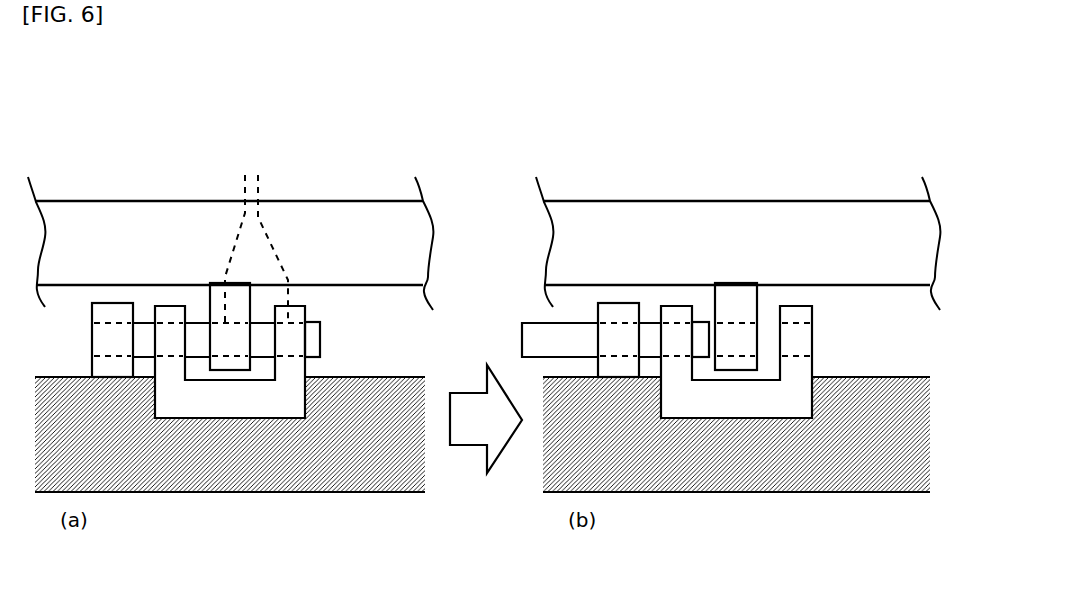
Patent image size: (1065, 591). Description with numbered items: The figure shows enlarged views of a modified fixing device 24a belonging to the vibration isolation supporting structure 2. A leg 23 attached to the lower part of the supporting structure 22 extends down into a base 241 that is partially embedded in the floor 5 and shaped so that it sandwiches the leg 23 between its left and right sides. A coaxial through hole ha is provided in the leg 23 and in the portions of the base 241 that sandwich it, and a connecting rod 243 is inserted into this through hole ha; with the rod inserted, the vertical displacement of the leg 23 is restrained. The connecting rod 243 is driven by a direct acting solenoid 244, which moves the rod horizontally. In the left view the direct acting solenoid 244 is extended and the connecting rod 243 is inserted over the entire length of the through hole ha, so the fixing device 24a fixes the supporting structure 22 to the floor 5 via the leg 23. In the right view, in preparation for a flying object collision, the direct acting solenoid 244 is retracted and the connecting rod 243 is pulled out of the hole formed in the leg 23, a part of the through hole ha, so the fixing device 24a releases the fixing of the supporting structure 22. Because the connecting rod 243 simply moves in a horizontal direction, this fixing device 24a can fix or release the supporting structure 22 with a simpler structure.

The vibration isolation supporting structure 2 is at (315, 193).
The supporting structure 22 is at (361, 211).
The fixing device 24a is at (228, 128).
The direct acting solenoid 244 is at (113, 303).
The connecting rod 243 is at (143, 330).
The base 241 is at (170, 313).
The leg 23 is at (232, 365).
The through hole ha is at (256, 237).
The floor 5 is at (372, 473).